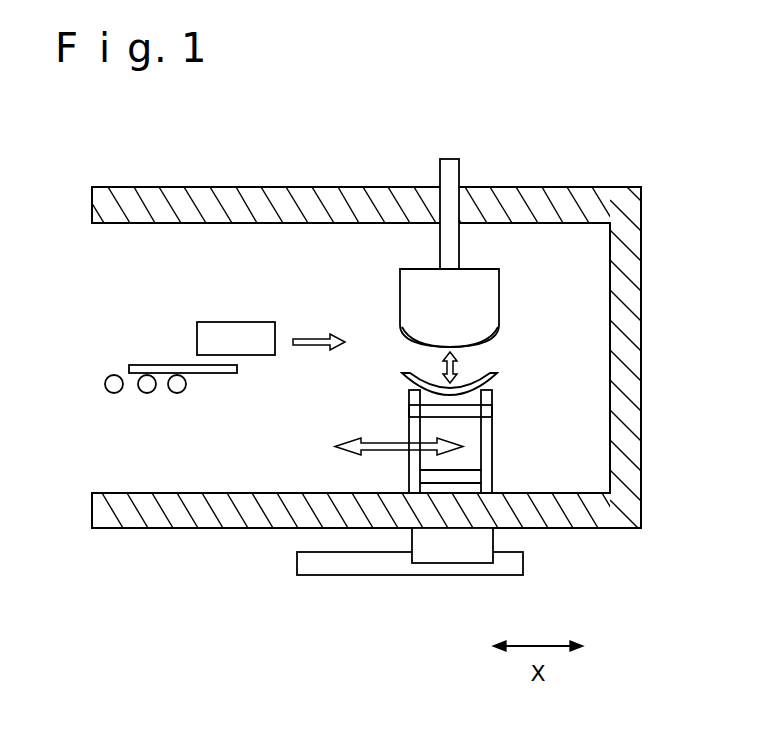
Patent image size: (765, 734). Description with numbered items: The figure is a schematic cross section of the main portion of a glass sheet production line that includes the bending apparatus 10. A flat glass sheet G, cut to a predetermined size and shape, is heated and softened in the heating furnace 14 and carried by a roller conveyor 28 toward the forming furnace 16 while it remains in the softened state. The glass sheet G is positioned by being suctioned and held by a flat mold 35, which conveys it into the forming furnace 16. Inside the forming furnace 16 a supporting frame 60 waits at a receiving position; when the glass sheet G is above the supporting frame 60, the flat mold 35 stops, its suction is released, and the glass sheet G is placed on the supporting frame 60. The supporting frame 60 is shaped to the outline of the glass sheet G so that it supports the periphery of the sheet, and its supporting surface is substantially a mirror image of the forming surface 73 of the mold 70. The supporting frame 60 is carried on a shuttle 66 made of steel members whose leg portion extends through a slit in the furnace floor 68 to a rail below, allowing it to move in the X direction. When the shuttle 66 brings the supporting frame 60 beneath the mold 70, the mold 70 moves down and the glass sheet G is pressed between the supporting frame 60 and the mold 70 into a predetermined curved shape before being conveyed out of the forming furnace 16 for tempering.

The bending apparatus 10 is at (379, 317).
The heating furnace 14 is at (257, 188).
The forming furnace 16 is at (546, 186).
The furnace floor 68 is at (222, 530).
The mold 70 is at (500, 296).
The forming surface 73 is at (482, 341).
The supporting frame 60 is at (497, 378).
The shuttle 66 is at (492, 462).
The flat mold 35 is at (236, 322).
The roller conveyor 28 is at (114, 374).
The glass sheet G is at (158, 363).